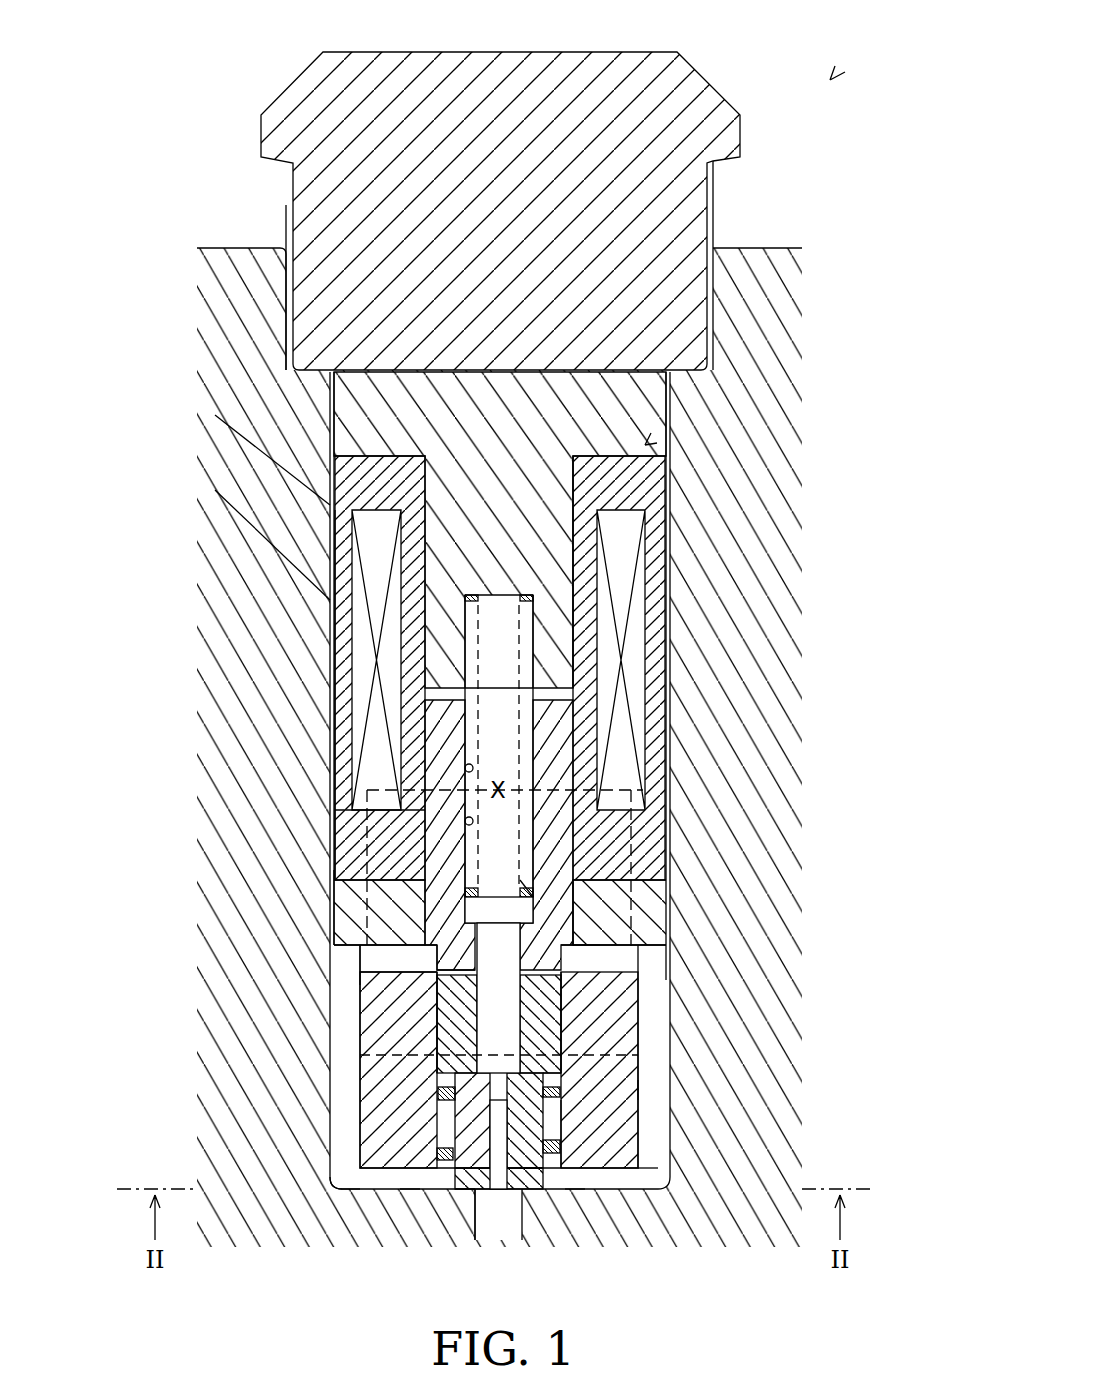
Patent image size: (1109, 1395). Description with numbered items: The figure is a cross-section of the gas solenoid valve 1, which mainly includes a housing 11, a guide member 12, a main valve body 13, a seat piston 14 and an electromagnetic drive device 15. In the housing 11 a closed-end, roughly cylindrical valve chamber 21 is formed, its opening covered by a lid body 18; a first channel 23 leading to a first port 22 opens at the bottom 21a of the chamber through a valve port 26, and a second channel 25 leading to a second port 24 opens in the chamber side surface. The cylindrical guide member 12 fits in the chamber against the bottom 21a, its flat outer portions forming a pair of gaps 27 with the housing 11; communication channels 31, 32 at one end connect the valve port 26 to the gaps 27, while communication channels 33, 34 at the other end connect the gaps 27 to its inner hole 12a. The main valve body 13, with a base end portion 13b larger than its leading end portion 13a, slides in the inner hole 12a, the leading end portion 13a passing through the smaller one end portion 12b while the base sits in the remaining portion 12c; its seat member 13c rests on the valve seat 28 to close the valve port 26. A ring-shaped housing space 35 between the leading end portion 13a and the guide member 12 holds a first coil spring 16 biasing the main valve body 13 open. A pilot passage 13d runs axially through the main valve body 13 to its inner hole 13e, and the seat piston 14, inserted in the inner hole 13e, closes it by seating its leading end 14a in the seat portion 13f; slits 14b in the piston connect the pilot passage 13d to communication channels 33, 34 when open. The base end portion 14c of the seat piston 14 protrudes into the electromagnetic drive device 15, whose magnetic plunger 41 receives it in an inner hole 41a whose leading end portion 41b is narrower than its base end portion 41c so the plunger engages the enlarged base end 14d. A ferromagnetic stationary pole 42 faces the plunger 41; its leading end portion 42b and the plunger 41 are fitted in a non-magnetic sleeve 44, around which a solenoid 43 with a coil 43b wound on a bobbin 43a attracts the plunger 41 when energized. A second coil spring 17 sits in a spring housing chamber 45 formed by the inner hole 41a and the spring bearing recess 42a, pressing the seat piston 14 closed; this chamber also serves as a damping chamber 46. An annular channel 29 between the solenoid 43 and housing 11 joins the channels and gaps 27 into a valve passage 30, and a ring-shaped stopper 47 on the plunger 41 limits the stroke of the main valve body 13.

The gas solenoid valve 1 is at (832, 78).
The housing 11 is at (785, 700).
The guide member 12 is at (655, 1122).
The inner hole 12a is at (640, 1066).
The one end portion 12b is at (545, 1192).
The remaining portion 12c is at (672, 1092).
The main valve body 13 is at (640, 1000).
The leading end portion 13a is at (652, 1190).
The base end portion 13b is at (563, 1032).
The seat member 13c is at (530, 1195).
The pilot passage 13d is at (558, 1145).
The inner hole 13e is at (432, 1025).
The seat portion 13f is at (560, 1082).
The seat piston 14 is at (476, 1012).
The leading end 14a is at (437, 1055).
The slits 14b is at (498, 1000).
The base end portion 14c is at (577, 950).
The base end 14d is at (583, 918).
The electromagnetic drive device 15 is at (645, 445).
The first coil spring 16 is at (437, 1150).
The second coil spring 17 is at (524, 888).
The lid body 18 is at (680, 70).
The valve chamber 21 is at (331, 1180).
The bottom 21a is at (345, 1191).
The first port 22 is at (503, 1200).
The first channel 23 is at (476, 1225).
The second port 24 is at (215, 415).
The second channel 25 is at (215, 490).
The valve port 26 is at (492, 1152).
The gaps 27 is at (328, 1130).
The valve seat 28 is at (458, 1240).
The annular channel 29 is at (335, 880).
The valve passage 30 is at (360, 975).
The communication channel 31 is at (410, 1190).
The communication channel 32 is at (576, 1190).
The communication channel 33 is at (362, 960).
The communication channel 34 is at (665, 965).
The housing space 35 is at (440, 1093).
The plunger 41 is at (427, 858).
The inner hole 41a is at (470, 817).
The leading end portion 41b is at (466, 897).
The base end portion 41c is at (470, 764).
The stationary pole 42 is at (545, 371).
The spring bearing recess 42a is at (484, 596).
The leading end portion 42b is at (578, 562).
The solenoid 43 is at (430, 668).
The bobbin 43a is at (345, 830).
The coil 43b is at (343, 700).
The sleeve 44 is at (602, 618).
The spring housing chamber 45 is at (633, 746).
The damping chamber 46 is at (533, 778).
The stopper 47 is at (440, 920).